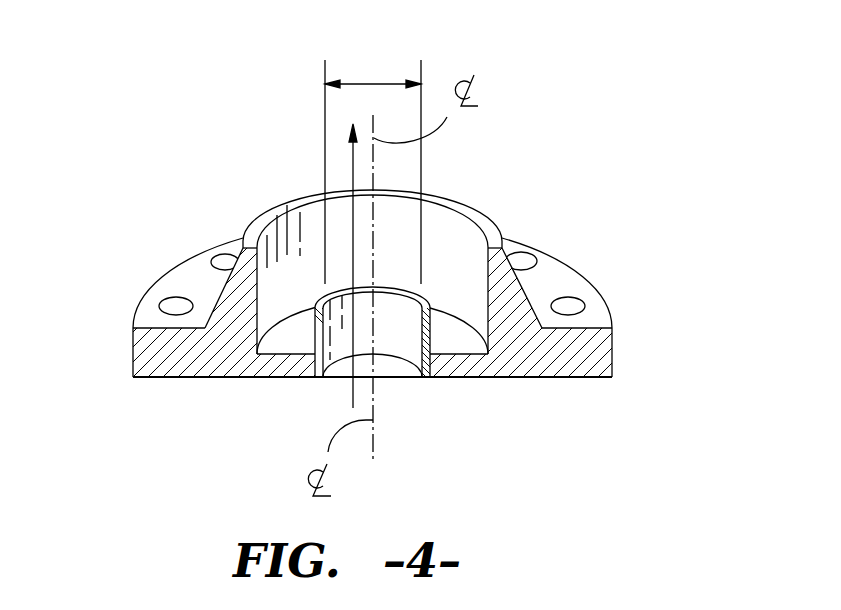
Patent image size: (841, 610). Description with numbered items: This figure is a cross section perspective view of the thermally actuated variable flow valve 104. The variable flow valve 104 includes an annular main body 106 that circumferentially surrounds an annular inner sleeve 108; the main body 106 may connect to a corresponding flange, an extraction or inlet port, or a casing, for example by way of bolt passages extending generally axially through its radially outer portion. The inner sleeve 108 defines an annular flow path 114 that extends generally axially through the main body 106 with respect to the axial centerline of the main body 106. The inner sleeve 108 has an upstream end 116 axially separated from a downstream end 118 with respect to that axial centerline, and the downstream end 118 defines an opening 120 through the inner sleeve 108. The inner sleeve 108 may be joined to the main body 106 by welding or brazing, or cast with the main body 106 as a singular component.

The variable flow valve 104 is at (382, 279).
The main body 106 is at (572, 262).
The inner sleeve 108 is at (311, 337).
The flow path 114 is at (353, 173).
The upstream end 116 is at (424, 380).
The downstream end 118 is at (392, 290).
The opening 120 is at (377, 83).